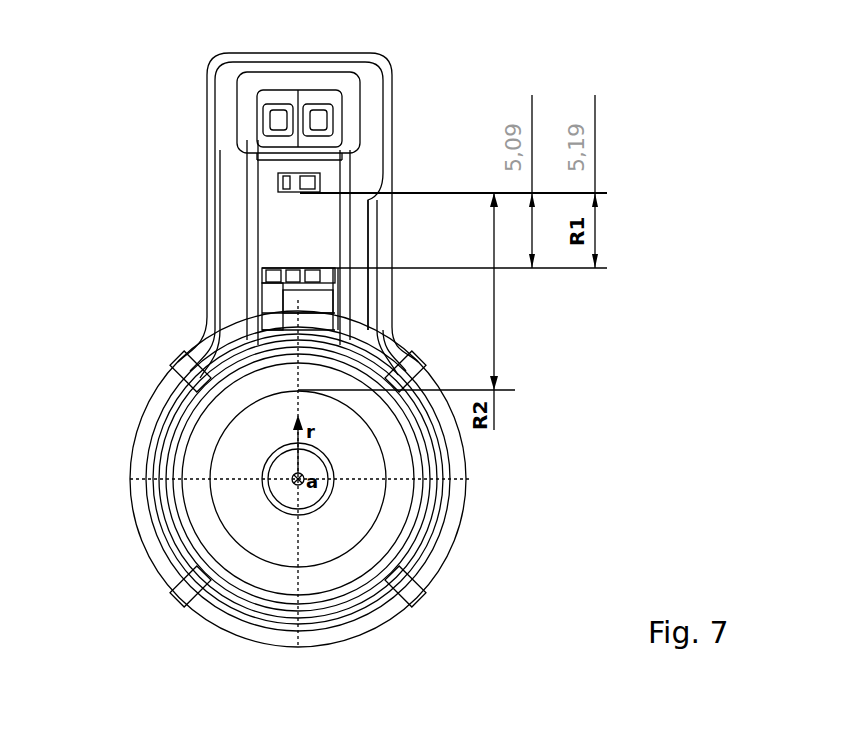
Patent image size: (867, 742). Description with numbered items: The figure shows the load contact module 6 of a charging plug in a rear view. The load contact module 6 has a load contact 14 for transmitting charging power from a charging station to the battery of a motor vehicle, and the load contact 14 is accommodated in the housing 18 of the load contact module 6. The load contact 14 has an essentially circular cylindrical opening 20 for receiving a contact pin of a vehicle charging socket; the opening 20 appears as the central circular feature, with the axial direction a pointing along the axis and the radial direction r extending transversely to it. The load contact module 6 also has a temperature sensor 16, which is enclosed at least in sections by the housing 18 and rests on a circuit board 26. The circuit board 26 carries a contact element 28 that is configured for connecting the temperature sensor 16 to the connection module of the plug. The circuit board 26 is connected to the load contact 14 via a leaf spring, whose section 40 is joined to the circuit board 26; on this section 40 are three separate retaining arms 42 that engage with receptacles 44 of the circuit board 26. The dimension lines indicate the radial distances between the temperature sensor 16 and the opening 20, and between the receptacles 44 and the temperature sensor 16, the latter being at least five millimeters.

The load contact module 6 is at (143, 72).
The load contact 14 is at (197, 460).
The temperature sensor 16 is at (312, 180).
The housing 18 is at (160, 543).
The opening 20 is at (352, 513).
The circuit board 26 is at (297, 218).
The contact element 28 is at (325, 97).
The section 40 is at (286, 305).
The retaining arms 42 is at (330, 280).
The receptacles 44 is at (330, 272).